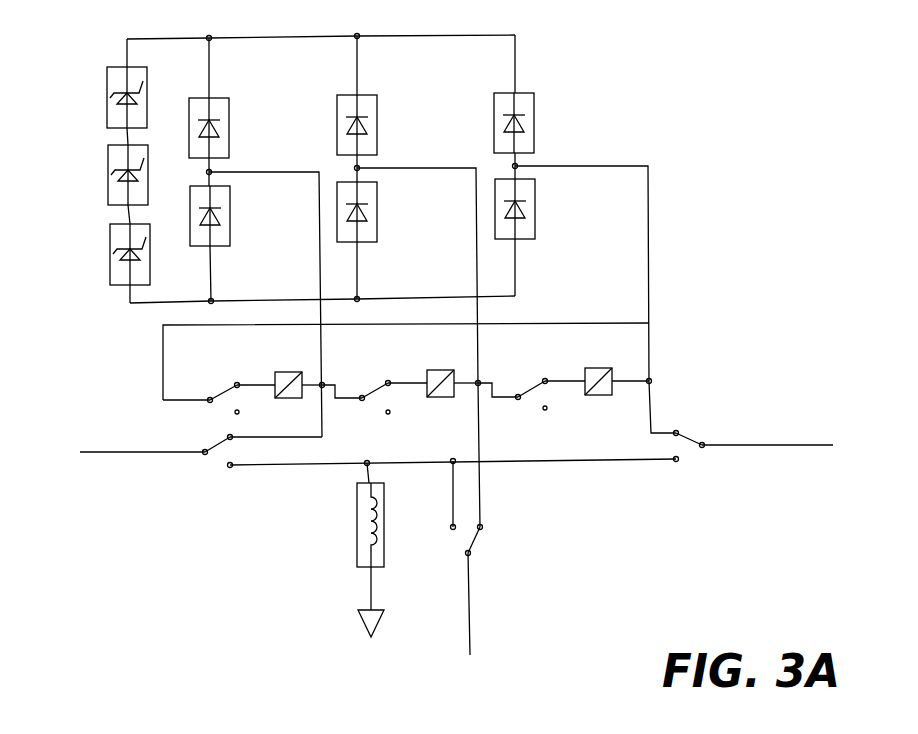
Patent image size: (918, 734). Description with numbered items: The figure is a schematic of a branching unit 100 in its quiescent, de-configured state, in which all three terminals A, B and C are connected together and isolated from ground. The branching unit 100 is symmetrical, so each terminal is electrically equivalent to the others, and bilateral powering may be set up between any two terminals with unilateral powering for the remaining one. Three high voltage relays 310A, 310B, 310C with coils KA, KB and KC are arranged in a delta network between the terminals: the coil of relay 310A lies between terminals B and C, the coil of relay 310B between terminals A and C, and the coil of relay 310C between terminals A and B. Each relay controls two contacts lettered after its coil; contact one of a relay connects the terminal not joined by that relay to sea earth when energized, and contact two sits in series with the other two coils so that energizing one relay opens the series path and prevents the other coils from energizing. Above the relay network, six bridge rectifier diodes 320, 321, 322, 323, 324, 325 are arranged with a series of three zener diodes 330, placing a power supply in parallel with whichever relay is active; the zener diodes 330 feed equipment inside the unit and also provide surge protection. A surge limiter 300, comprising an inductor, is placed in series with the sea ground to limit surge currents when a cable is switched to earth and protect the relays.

The branching unit 100 is at (766, 118).
The zener diode 330 is at (108, 100).
The bridge rectifier diode 321 is at (229, 128).
The bridge rectifier diode 320 is at (230, 218).
The bridge rectifier diode 323 is at (377, 127).
The bridge rectifier diode 322 is at (377, 218).
The bridge rectifier diode 325 is at (534, 128).
The bridge rectifier diode 324 is at (534, 217).
The high voltage relay 310C is at (275, 374).
The high voltage relay 310B is at (427, 374).
The high voltage relay 310A is at (585, 371).
The surge limiter 300 is at (357, 558).